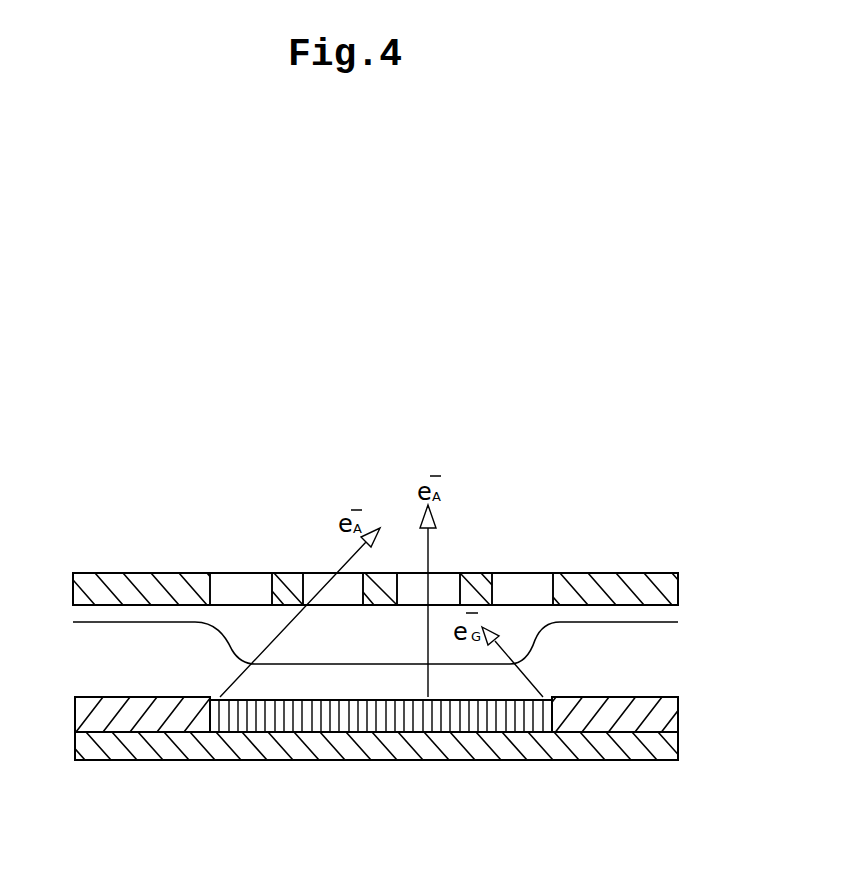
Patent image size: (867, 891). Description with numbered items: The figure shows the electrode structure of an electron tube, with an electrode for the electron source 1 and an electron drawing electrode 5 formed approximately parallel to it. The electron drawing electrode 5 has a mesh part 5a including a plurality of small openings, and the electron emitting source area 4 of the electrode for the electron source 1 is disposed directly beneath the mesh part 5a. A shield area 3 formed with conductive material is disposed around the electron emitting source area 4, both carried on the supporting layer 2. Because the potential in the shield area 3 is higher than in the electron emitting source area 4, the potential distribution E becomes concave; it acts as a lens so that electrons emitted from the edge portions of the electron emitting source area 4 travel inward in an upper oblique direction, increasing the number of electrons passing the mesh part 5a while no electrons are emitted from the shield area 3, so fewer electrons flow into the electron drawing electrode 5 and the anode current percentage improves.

The electrode for the electron source 1 is at (406, 716).
The substrate 2 is at (523, 747).
The shield area 3 is at (108, 712).
The electron emitting source area 4 is at (305, 754).
The electron drawing electrode 5 is at (601, 583).
The mesh part 5a is at (499, 581).
The potential distribution E is at (107, 623).